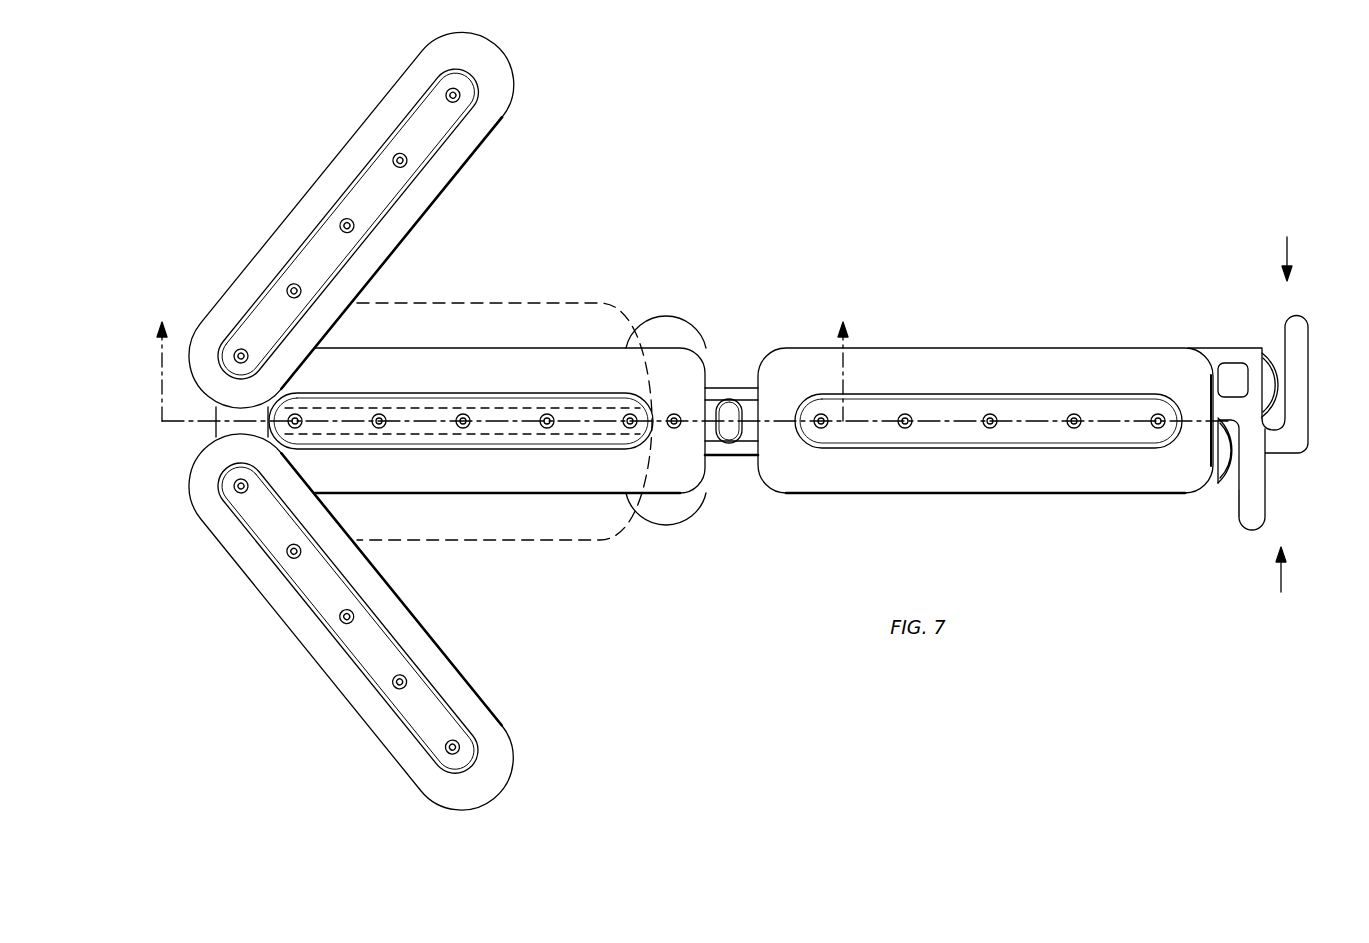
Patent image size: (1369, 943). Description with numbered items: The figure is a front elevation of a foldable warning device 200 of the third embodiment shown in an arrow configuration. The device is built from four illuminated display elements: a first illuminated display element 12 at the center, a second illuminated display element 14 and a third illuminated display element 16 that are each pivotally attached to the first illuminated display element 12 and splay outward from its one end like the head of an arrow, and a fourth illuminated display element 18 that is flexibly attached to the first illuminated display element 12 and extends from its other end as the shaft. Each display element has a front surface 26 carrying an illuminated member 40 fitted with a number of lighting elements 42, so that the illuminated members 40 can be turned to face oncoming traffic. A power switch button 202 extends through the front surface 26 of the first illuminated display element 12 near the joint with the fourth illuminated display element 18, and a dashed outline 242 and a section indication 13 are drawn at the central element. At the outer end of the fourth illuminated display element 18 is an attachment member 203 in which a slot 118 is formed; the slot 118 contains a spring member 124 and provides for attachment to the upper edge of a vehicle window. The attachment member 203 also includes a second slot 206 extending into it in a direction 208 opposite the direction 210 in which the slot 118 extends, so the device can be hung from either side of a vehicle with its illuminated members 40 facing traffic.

The foldable warning device 200 is at (228, 211).
The second illuminated display element 14 is at (237, 268).
The third illuminated display element 16 is at (252, 599).
The first illuminated display element 12 is at (568, 348).
The fourth illuminated display element 18 is at (796, 333).
The illuminated member 40 is at (303, 232).
The lighting elements 42 is at (993, 412).
The front surface 26 is at (985, 374).
The pivot envelope 242 is at (468, 303).
The power switch button 202 is at (674, 414).
The section line 13 is at (501, 358).
The attachment member 203 is at (1204, 338).
The second slot 206 is at (1272, 345).
The direction 208 is at (1287, 254).
The direction 210 is at (1288, 578).
The spring member 124 is at (1232, 463).
The slot 118 is at (1226, 500).